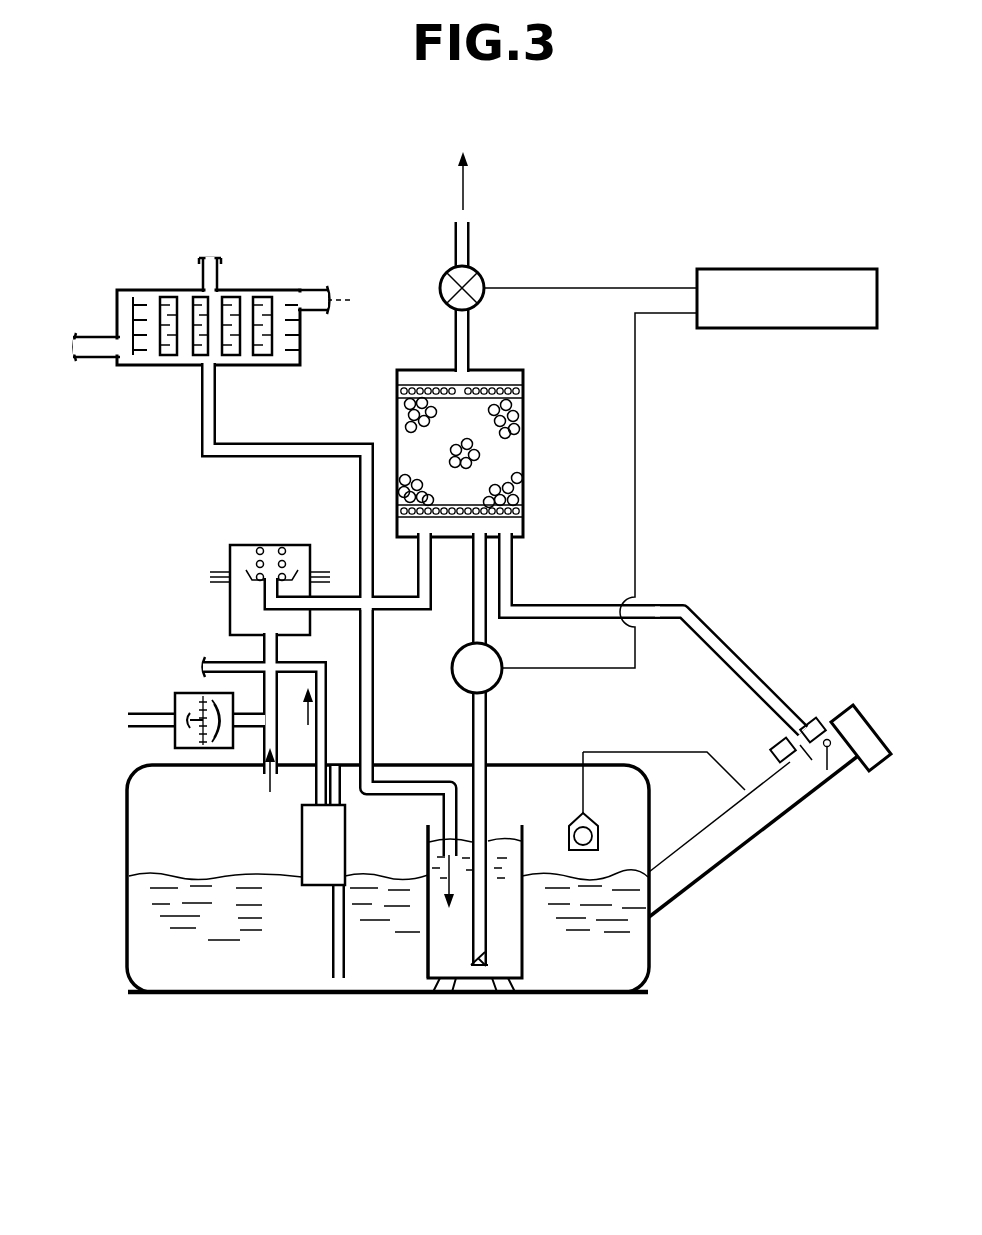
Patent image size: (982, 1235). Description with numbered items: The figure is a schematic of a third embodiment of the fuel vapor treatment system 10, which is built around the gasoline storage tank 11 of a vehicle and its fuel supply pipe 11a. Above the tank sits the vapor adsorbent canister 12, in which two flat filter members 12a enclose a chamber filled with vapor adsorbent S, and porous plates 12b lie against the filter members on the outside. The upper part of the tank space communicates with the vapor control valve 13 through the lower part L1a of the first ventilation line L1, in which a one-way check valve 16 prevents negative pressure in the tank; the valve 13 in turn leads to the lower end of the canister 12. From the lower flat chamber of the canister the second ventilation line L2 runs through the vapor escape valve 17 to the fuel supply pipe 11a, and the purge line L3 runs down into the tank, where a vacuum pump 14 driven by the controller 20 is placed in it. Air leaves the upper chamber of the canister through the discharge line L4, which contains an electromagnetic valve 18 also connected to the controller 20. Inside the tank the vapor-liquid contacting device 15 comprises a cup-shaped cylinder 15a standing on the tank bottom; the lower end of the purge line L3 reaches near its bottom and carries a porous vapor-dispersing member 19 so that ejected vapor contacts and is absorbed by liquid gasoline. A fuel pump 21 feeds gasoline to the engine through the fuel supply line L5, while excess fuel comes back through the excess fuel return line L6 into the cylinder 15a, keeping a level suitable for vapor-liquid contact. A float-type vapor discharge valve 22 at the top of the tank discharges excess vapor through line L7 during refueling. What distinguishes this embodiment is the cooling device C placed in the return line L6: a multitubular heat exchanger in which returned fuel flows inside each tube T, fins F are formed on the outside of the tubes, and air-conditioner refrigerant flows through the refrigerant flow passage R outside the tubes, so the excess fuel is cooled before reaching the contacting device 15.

The vapor treatment system 10 is at (599, 209).
The gasoline storage tank 11 is at (257, 987).
The fuel supply pipe 11a is at (768, 830).
The vapor adsorbent canister 12 is at (485, 428).
The flat filter member 12a is at (433, 387).
The porous plate 12b is at (497, 387).
The vapor control valve 13 is at (230, 598).
The vacuum pump 14 is at (502, 684).
The vapor-liquid contacting device 15 is at (523, 952).
The cup-shaped cylinder 15a is at (428, 920).
The one-way check valve 16 is at (176, 738).
The vapor escape valve 17 is at (812, 722).
The electromagnetic valve 18 is at (441, 292).
The porous vapor-dispersing member 19 is at (476, 972).
The controller 20 is at (795, 269).
The fuel pump 21 is at (302, 838).
The vapor discharge valve 22 is at (598, 828).
The first ventilation line L1 is at (348, 594).
The lower part of first ventilation line L1a is at (262, 688).
The second ventilation line L2 is at (708, 626).
The purge line L3 is at (514, 587).
The discharge line L4 is at (470, 240).
The fuel supply line L5 is at (218, 660).
The excess fuel return line L6 is at (375, 710).
The vapor discharge line L7 is at (677, 752).
The vapor adsorbent S is at (473, 450).
The tube T is at (160, 318).
The fins F is at (170, 306).
The cooling device C is at (250, 296).
The refrigerant flow passage R is at (262, 302).